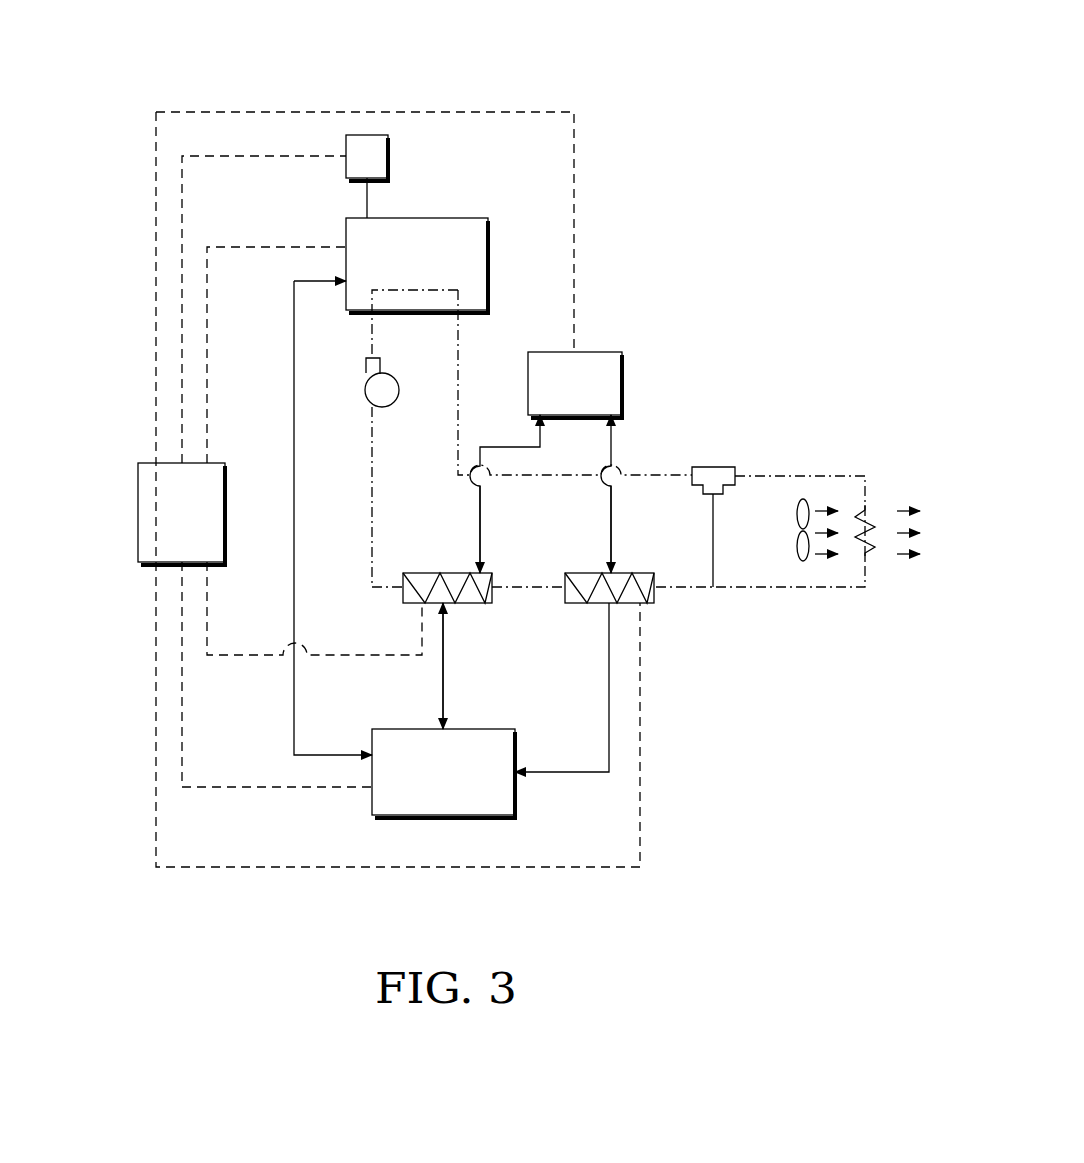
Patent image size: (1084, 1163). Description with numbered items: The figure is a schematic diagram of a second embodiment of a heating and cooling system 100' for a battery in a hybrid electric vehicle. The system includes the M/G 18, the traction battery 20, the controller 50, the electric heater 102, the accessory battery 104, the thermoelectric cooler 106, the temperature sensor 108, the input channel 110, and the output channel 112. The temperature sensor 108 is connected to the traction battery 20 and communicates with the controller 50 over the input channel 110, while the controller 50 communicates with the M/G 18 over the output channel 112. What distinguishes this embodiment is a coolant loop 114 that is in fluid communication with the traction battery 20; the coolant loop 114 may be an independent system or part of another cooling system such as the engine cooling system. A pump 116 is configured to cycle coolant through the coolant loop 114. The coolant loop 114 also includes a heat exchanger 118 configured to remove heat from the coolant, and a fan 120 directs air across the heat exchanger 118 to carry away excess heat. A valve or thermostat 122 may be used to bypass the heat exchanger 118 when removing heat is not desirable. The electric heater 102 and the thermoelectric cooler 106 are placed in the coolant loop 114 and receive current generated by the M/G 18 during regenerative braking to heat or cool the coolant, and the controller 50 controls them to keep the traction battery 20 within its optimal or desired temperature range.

The heating and cooling system 100' is at (499, 450).
The temperature sensor 108 is at (389, 160).
The traction battery 20 is at (490, 265).
The input channel 110 is at (264, 158).
The accessory battery 104 is at (596, 352).
The valve or thermostat 122 is at (713, 467).
The coolant loop 114 is at (807, 476).
The heat exchanger 118 is at (870, 512).
The fan 120 is at (800, 525).
The controller 50 is at (138, 512).
The pump 116 is at (365, 377).
The electric heater 102 is at (448, 573).
The thermoelectric cooler 106 is at (632, 573).
The M/G 18 is at (478, 729).
The output channel 112 is at (262, 787).